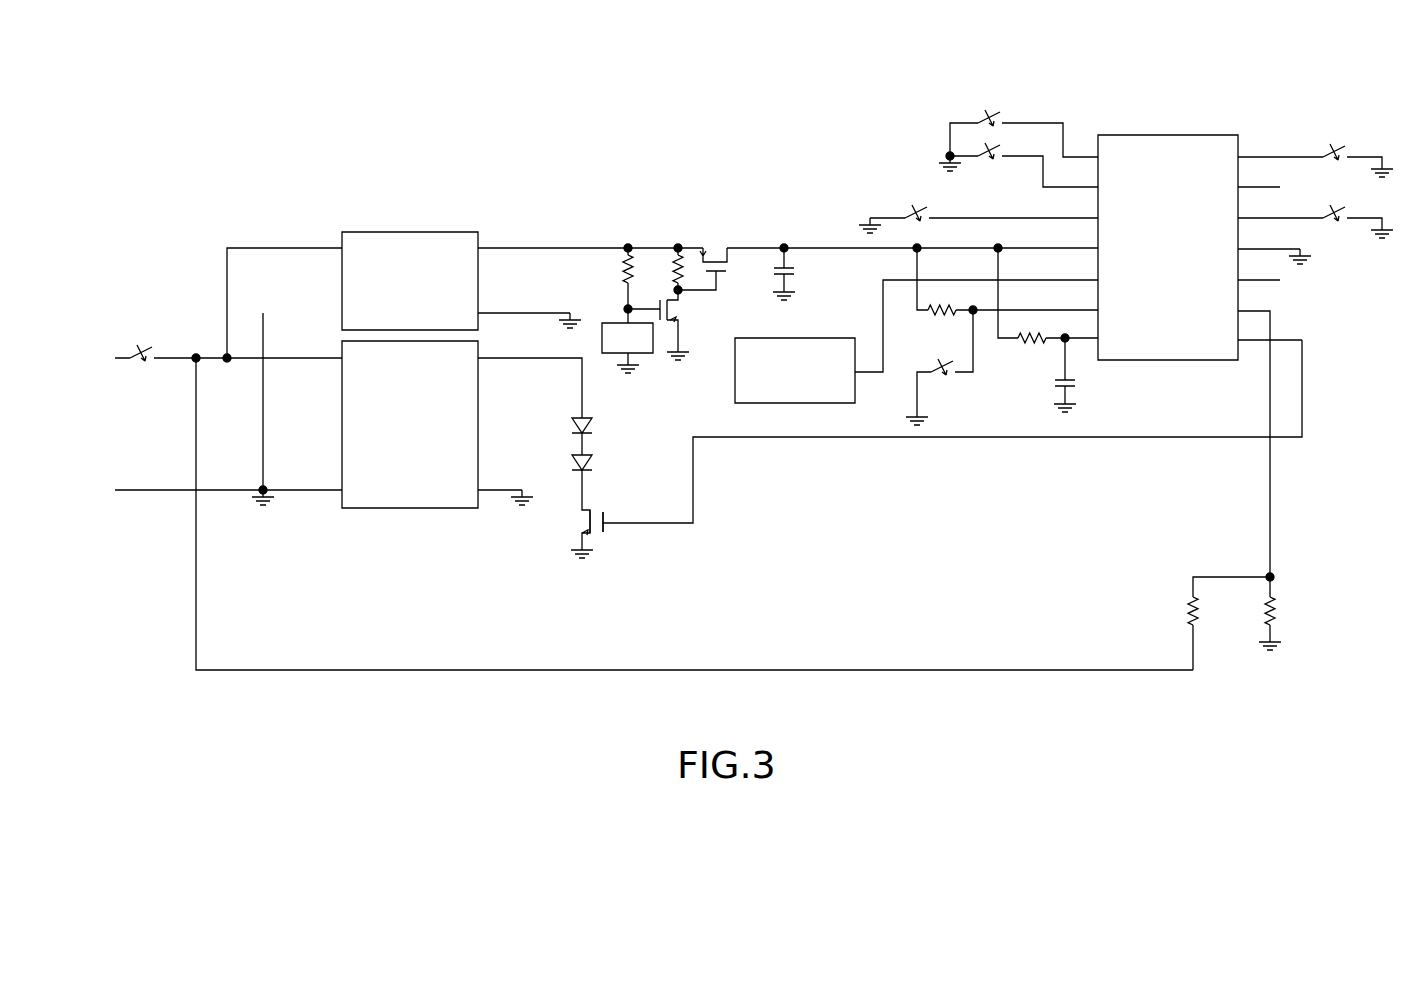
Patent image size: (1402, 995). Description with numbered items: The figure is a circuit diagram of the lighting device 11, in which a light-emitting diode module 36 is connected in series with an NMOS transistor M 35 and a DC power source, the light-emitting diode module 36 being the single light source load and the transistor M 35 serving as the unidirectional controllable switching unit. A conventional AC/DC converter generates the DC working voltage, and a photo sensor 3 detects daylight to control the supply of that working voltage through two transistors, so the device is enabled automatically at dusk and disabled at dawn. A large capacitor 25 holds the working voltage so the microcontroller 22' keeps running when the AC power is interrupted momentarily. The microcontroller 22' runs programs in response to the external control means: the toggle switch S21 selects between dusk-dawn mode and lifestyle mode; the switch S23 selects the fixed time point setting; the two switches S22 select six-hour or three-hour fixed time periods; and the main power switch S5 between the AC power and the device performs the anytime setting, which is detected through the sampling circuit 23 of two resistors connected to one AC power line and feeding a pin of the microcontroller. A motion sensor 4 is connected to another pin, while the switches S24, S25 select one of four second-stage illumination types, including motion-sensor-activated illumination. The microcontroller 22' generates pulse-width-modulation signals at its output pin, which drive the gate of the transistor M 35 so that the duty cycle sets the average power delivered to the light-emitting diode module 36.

The lighting device 11 is at (258, 176).
The main power switch S5 is at (140, 342).
The light-emitting diode (LED) module 36 is at (568, 446).
The NMOS transistor M 35 is at (600, 546).
The photo sensor CDS 3 is at (645, 357).
The large capacitor EC 25 is at (776, 274).
The motion sensor 4 is at (836, 338).
The external control means (toggle switch) S21 is at (952, 378).
The microcontroller 22' is at (1168, 210).
The toggle switches (3H/6H) S22 is at (990, 108).
The toggle switch S23 is at (918, 204).
The toggle switch S24 is at (1340, 228).
The toggle switch S25 is at (1335, 146).
The sampling circuit 23 is at (1283, 607).